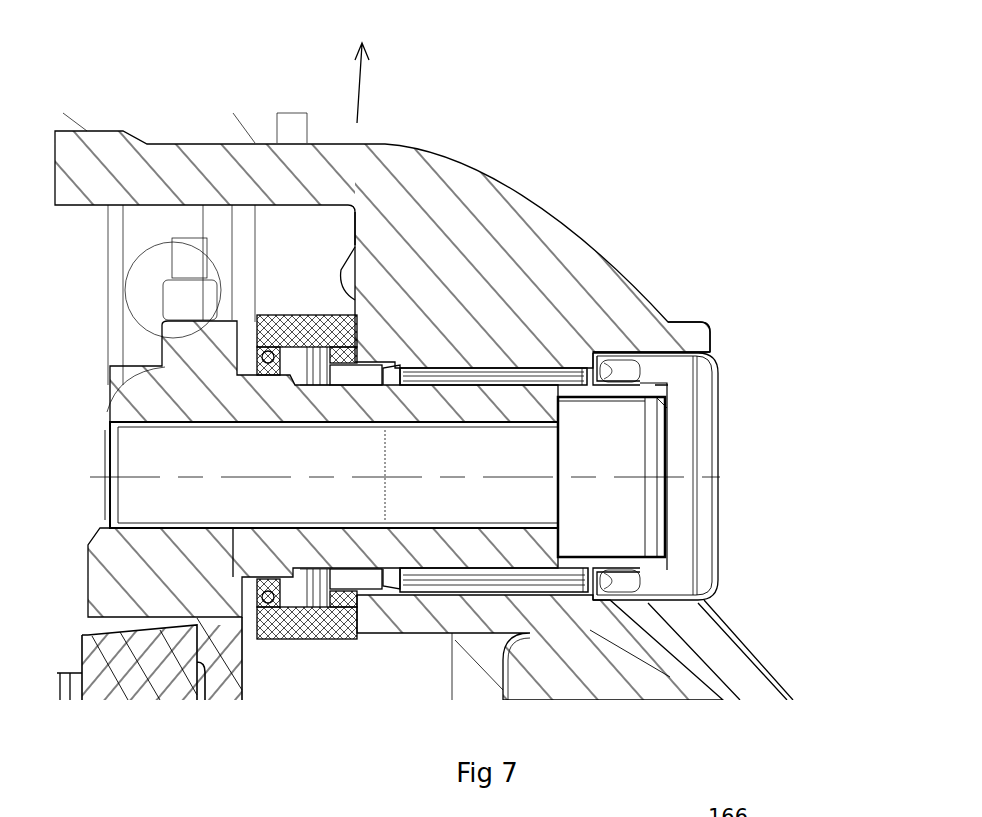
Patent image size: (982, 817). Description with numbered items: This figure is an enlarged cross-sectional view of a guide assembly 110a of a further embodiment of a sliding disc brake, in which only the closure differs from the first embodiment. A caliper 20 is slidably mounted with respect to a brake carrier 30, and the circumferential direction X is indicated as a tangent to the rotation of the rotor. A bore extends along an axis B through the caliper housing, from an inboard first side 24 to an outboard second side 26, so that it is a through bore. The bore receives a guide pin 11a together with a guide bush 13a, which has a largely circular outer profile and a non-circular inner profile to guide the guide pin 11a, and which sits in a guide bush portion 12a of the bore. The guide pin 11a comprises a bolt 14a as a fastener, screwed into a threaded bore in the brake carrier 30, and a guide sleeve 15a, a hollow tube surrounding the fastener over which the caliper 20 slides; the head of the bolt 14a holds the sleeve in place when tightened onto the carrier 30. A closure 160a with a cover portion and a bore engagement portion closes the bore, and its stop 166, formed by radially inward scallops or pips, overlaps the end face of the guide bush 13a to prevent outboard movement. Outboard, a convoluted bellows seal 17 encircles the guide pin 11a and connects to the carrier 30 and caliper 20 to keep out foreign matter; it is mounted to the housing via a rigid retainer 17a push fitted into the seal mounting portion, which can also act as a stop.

The caliper 20 is at (590, 258).
The first side 24 is at (712, 340).
The brake carrier 30 is at (168, 365).
The bolt 14a is at (605, 452).
The axis B is at (610, 478).
The closure 160a is at (718, 486).
The guide assembly 110a is at (760, 353).
The guide pin 11a is at (665, 380).
The stop 166 is at (612, 380).
The guide bush portion 12a is at (512, 384).
The guide bush 13a is at (563, 592).
The guide sleeve 15a is at (385, 398).
The second side 26 is at (358, 228).
The bellows seal 17 is at (289, 637).
The rigid retainer 17a is at (358, 594).
The circumferential direction X is at (363, 69).